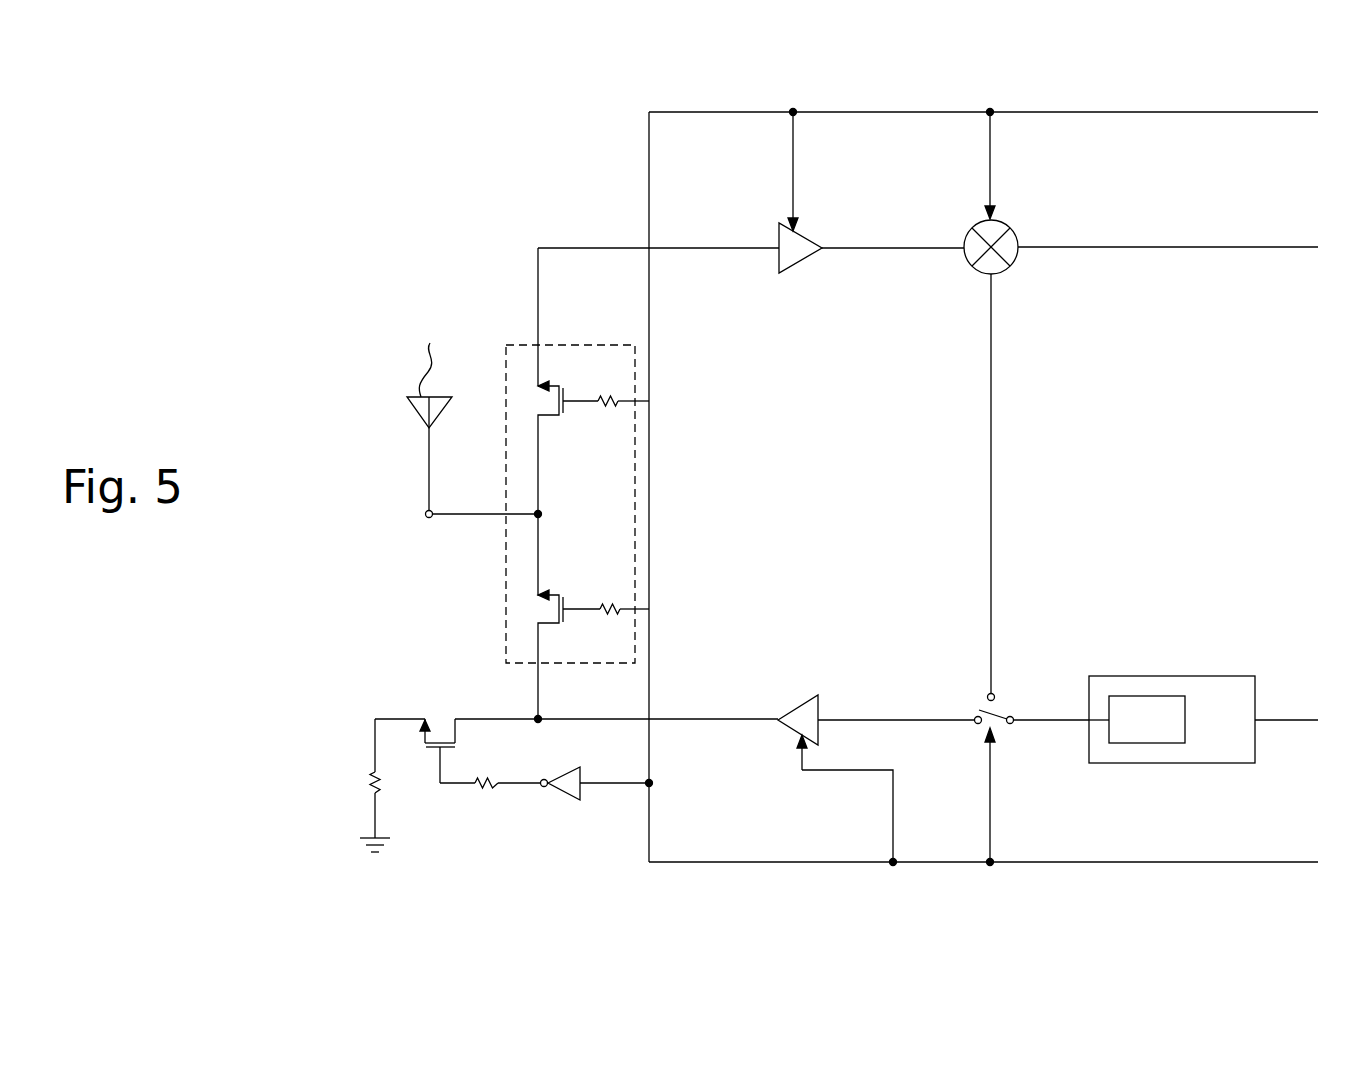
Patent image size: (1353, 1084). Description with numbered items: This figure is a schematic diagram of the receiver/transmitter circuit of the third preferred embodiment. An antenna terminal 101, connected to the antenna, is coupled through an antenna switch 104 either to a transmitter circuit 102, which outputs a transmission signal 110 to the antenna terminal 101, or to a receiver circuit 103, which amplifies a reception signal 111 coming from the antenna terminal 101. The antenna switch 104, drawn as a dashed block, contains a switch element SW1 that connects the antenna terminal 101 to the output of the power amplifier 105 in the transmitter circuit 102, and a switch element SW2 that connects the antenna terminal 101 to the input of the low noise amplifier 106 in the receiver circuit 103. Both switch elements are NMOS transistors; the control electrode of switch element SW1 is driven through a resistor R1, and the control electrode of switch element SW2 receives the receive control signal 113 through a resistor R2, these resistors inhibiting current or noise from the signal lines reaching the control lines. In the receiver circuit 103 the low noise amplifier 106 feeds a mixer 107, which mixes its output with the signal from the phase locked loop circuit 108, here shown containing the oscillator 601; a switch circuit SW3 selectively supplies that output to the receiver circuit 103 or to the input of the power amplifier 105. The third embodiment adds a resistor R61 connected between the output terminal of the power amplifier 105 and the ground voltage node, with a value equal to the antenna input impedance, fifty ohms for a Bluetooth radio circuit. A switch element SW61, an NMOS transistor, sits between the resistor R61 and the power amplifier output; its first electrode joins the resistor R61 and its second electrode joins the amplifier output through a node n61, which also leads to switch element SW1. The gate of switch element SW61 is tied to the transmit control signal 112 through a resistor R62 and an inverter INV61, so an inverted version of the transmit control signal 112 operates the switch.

The antenna terminal 101 is at (429, 520).
The transmitter circuit 102 is at (872, 748).
The receiver circuit 103 is at (1048, 249).
The antenna switch 104 is at (571, 532).
The power amplifier 105 is at (825, 702).
The low noise amplifier 106 is at (817, 233).
The mixer 107 is at (1018, 227).
The phase locked loop circuit 108 is at (1203, 699).
The transmission signal 110 is at (712, 722).
The reception signal 111 is at (550, 248).
The transmit control signal 112 is at (1140, 862).
The receive control signal 113 is at (1095, 112).
The oscillator 601 is at (1140, 743).
The switch element SW1 is at (570, 616).
The switch element SW2 is at (570, 447).
The switch circuit SW3 is at (1013, 702).
The resistor R1 is at (620, 603).
The resistor R2 is at (618, 403).
The switch element SW61 is at (426, 737).
The resistor R61 is at (363, 800).
The resistor R62 is at (490, 798).
The inverter INV61 is at (570, 800).
The node n61 is at (540, 736).